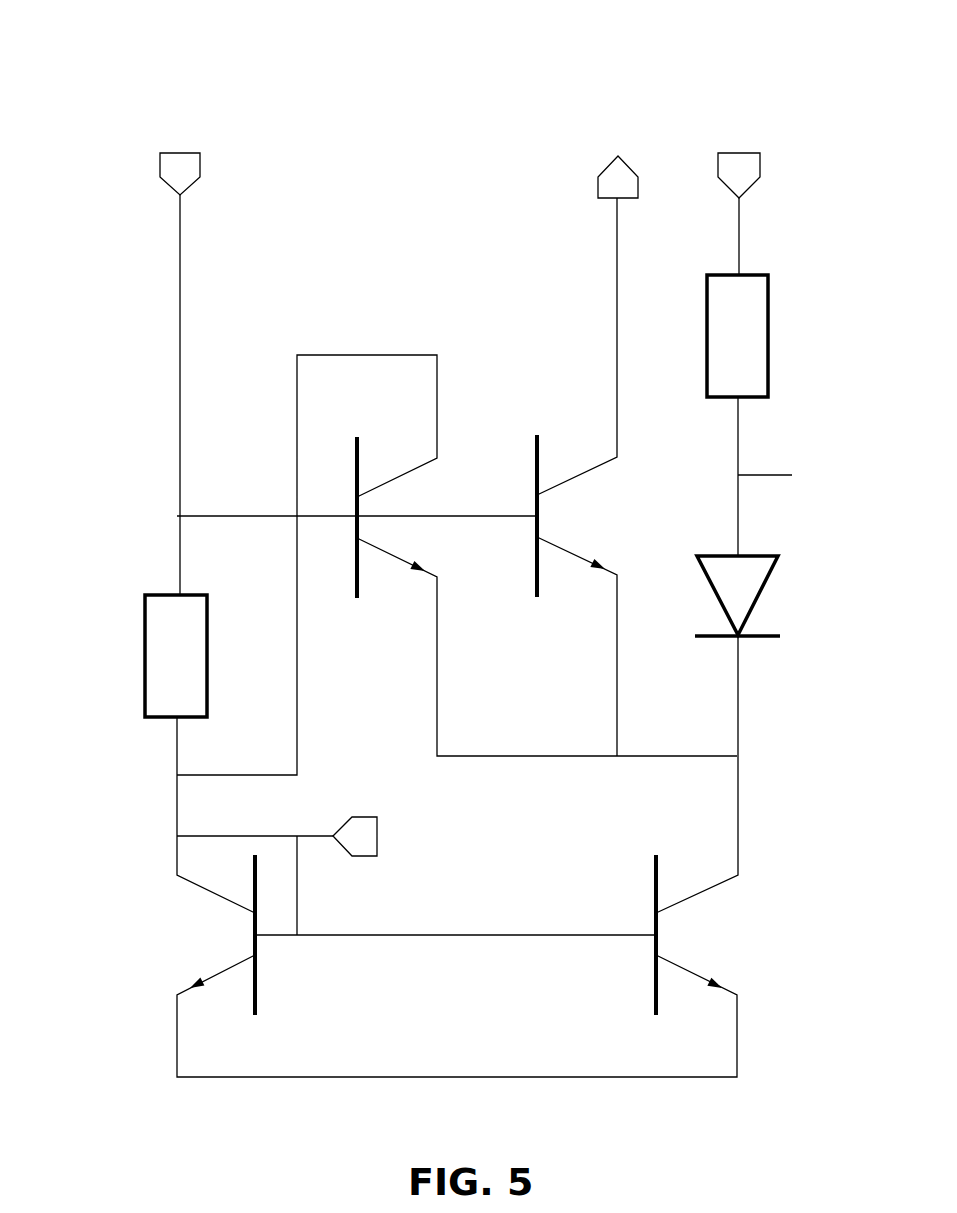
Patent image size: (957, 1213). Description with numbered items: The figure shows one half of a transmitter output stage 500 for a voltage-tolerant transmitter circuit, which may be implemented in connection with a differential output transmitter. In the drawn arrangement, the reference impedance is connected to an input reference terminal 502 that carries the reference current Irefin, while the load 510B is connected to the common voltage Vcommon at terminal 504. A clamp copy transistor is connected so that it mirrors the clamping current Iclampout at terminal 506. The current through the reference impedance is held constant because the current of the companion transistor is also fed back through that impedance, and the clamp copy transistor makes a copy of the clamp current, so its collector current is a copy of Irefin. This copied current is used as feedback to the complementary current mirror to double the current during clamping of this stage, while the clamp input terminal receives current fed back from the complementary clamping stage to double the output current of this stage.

The transmitter output stage 500 is at (803, 46).
The input reference terminal 502 is at (188, 153).
The Vcommon terminal 504 is at (749, 153).
The Iclampout terminal 506 is at (621, 160).
The load 510B is at (752, 275).